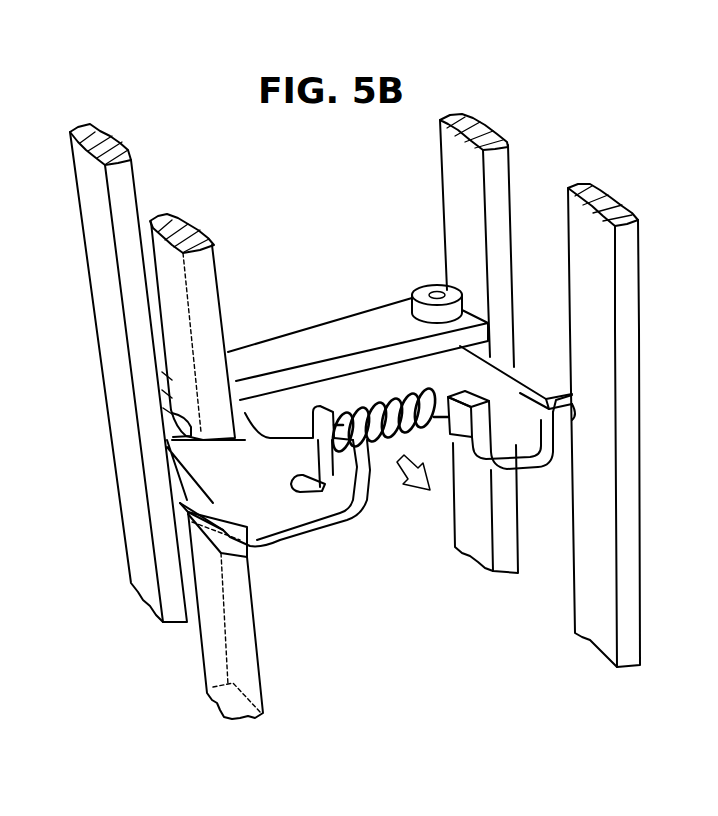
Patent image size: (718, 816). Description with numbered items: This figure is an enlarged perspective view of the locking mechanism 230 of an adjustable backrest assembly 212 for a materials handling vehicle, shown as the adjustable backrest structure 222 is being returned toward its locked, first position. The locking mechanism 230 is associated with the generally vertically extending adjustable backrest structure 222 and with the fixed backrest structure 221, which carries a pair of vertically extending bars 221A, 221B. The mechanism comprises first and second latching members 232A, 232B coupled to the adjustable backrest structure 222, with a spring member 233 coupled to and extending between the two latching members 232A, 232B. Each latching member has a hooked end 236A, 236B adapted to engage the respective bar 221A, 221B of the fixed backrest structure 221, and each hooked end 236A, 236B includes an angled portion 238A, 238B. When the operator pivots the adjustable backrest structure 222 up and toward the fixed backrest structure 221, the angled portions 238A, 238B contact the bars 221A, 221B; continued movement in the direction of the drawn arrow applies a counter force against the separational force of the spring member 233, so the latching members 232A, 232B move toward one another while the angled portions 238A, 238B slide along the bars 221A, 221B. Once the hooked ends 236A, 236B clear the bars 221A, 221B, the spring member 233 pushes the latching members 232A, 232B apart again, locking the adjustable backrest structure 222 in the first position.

The adjustable backrest assembly 212 is at (91, 102).
The adjustable backrest structure 222 is at (460, 203).
The fixed backrest structure 221 is at (213, 337).
The vertically extending bar 221A is at (220, 660).
The vertically extending bar 221B is at (634, 327).
The locking mechanism 230 is at (339, 268).
The first latching member 232A is at (268, 505).
The second latching member 232B is at (490, 530).
The spring member 233 is at (370, 447).
The hooked end 236A is at (168, 487).
The hooked end 236B is at (557, 400).
The angled portion 238A is at (225, 528).
The angled portion 238B is at (572, 417).